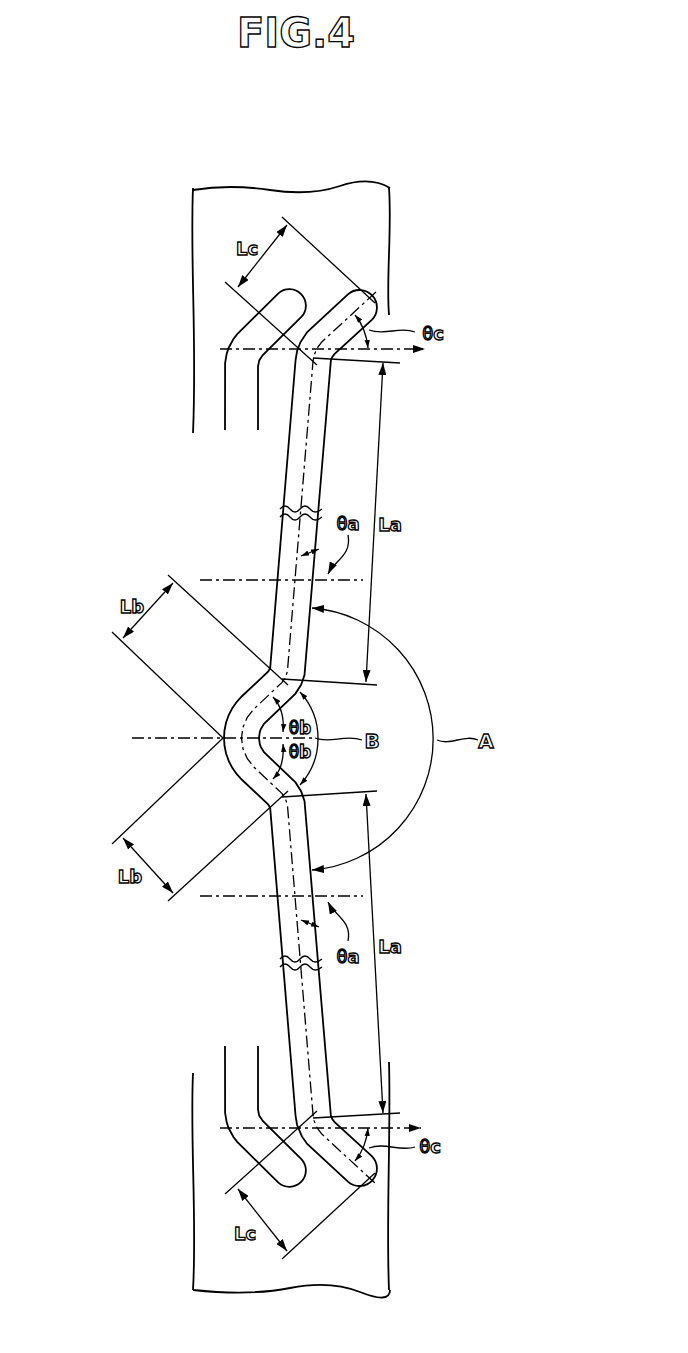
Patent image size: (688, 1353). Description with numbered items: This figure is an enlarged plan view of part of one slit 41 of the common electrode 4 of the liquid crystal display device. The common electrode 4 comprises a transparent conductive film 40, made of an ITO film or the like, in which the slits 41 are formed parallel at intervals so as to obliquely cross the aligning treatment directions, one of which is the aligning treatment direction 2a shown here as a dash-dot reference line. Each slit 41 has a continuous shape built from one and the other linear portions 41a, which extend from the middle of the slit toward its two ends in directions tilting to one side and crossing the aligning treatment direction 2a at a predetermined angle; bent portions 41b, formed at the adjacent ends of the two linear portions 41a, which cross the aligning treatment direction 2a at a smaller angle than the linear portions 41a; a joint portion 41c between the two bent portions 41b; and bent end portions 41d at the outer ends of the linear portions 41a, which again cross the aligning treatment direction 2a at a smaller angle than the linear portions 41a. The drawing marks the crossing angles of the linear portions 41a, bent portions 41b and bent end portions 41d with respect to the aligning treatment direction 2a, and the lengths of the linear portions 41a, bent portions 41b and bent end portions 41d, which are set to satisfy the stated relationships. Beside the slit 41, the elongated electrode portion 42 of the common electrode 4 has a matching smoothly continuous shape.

The common electrode 4 is at (233, 181).
The transparent conductive film 40 is at (345, 203).
The slit 41 is at (229, 407).
The linear portion 41a is at (295, 475).
The bent portion 41b is at (252, 688).
The joint portion 41c is at (225, 725).
The bent end portion 41d is at (335, 305).
The elongated electrode portion 42 is at (277, 384).
The aligning treatment direction 2a is at (403, 362).